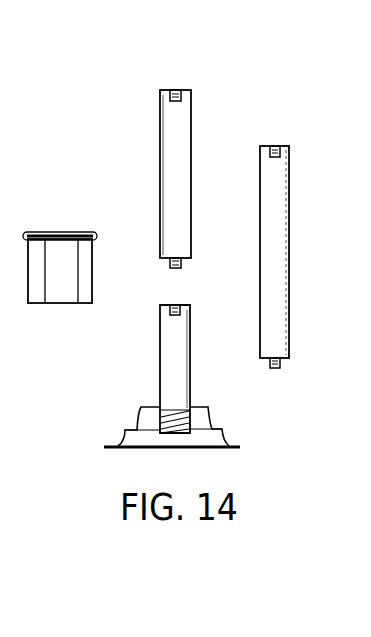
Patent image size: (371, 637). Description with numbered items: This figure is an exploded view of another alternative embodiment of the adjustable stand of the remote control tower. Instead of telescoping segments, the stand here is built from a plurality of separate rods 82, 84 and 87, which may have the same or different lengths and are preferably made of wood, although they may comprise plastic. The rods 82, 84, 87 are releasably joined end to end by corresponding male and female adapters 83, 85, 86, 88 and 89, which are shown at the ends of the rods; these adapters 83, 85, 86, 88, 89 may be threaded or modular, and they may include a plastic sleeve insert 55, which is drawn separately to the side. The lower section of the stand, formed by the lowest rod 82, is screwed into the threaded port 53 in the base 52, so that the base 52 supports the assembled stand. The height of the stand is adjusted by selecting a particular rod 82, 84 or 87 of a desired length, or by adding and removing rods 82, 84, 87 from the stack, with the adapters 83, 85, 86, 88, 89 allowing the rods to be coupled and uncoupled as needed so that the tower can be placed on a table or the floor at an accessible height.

The base 52 is at (226, 439).
The threaded port 53 is at (190, 410).
The plastic sleeve insert 55 is at (62, 292).
The rod 82 is at (163, 351).
The male and female adapter 83 is at (172, 304).
The rod 84 is at (160, 188).
The male and female adapter 85 is at (181, 265).
The male and female adapter 86 is at (175, 89).
The rod 87 is at (289, 266).
The male and female adapter 88 is at (280, 365).
The male and female adapter 89 is at (274, 146).